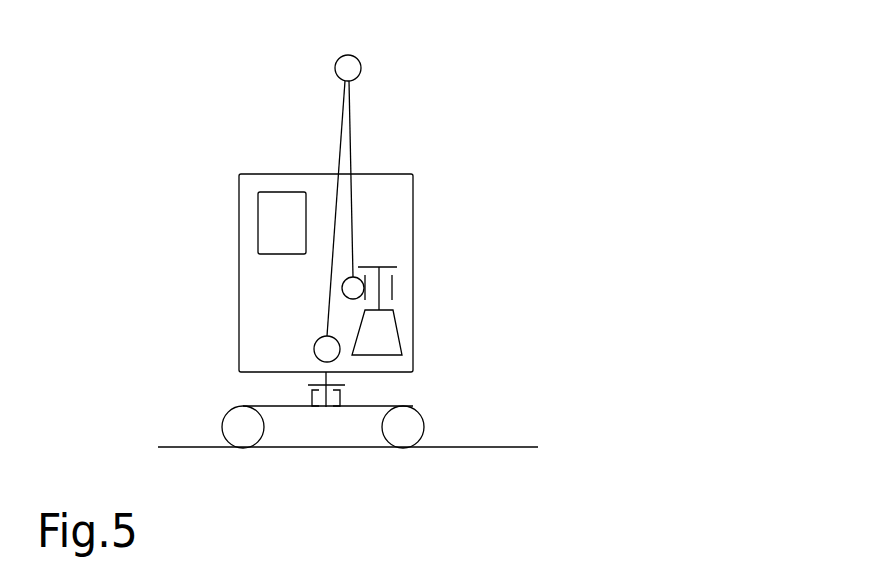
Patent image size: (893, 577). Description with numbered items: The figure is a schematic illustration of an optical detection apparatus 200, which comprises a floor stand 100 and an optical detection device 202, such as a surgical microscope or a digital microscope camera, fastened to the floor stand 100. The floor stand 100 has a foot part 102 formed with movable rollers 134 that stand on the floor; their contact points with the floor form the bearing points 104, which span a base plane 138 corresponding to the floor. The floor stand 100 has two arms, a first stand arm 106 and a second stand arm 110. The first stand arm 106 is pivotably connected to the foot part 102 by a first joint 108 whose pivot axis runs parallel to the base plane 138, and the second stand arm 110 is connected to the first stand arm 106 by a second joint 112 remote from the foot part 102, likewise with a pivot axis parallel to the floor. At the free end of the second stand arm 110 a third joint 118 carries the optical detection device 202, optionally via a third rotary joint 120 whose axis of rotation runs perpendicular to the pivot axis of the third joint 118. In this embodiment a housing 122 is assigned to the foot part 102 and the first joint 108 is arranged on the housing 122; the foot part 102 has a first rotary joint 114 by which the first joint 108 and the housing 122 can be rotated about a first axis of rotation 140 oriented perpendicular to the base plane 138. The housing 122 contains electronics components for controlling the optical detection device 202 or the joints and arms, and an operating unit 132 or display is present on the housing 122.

The optical detection apparatus 200 is at (488, 137).
The floor stand 100 is at (363, 133).
The foot part 102 is at (380, 405).
The bearing points 104 is at (243, 448).
The first stand arm 106 is at (341, 148).
The first joint 108 is at (316, 343).
The second stand arm 110 is at (353, 168).
The second joint 112 is at (349, 69).
The first rotary joint 114 is at (310, 397).
The third joint 118 is at (354, 278).
The third rotary joint 120 is at (378, 293).
The housing 122 is at (248, 266).
The operating unit 132 is at (278, 208).
The rollers 134 is at (235, 423).
The base plane 138 is at (325, 448).
The first axis of rotation 140 is at (325, 418).
The optical detection device 202 is at (382, 333).